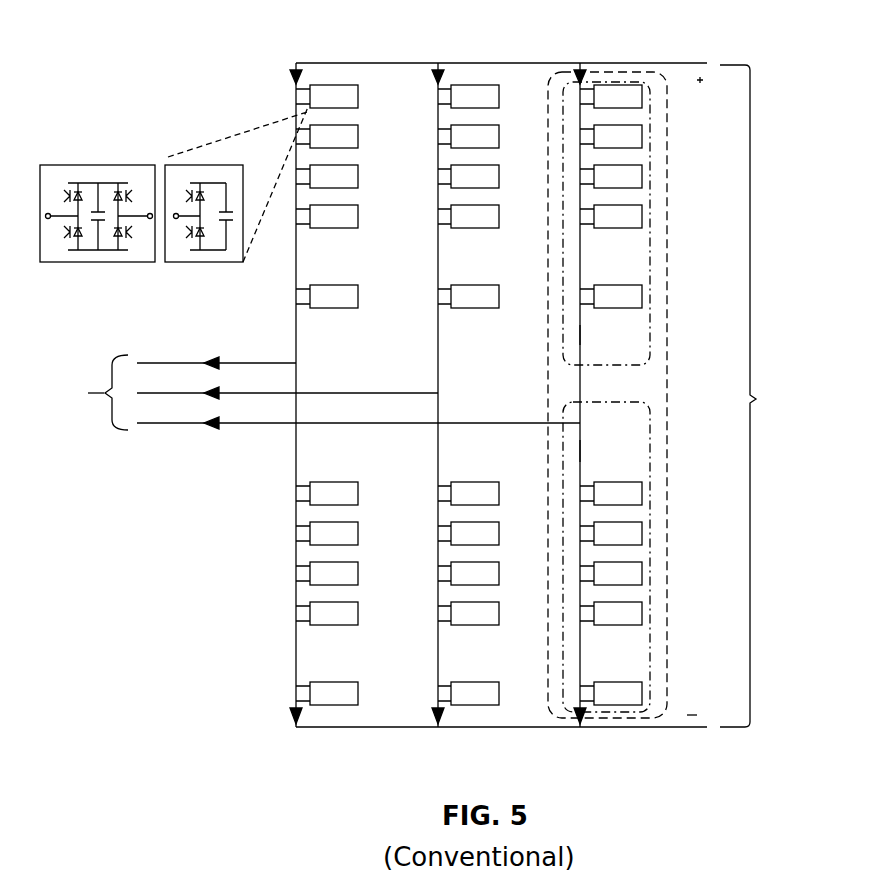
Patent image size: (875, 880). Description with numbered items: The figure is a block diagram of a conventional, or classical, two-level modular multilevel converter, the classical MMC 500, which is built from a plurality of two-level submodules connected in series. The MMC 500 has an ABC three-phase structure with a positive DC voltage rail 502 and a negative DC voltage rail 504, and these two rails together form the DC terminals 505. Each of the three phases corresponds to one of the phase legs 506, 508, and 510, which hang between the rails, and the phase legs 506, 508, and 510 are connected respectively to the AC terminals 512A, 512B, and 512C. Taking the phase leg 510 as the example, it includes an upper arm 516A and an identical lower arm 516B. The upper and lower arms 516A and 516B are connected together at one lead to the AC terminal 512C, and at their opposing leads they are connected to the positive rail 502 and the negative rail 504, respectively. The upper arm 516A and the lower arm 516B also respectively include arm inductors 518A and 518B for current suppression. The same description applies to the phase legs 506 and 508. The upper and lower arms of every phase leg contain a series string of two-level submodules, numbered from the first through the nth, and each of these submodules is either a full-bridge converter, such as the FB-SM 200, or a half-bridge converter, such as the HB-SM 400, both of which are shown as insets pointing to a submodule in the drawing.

The classical MMC 500 is at (504, 21).
The positive DC voltage rail 502 is at (676, 62).
The negative DC voltage rail 504 is at (692, 732).
The DC terminals 505 is at (757, 399).
The phase leg 506 is at (290, 690).
The phase leg 508 is at (432, 692).
The phase leg 510 is at (546, 697).
The AC terminal 512A is at (244, 366).
The AC terminal 512B is at (287, 386).
The AC terminal 512C is at (358, 416).
The upper arm 516A is at (655, 193).
The lower arm 516B is at (645, 492).
The arm inductor 518A is at (588, 336).
The arm inductor 518B is at (585, 452).
The FB-SM 200 is at (100, 256).
The HB-SM 400 is at (198, 256).